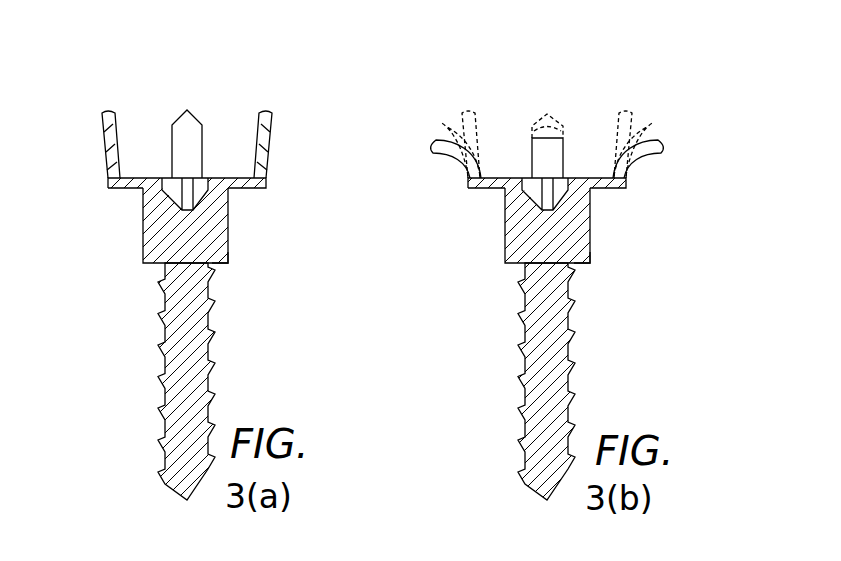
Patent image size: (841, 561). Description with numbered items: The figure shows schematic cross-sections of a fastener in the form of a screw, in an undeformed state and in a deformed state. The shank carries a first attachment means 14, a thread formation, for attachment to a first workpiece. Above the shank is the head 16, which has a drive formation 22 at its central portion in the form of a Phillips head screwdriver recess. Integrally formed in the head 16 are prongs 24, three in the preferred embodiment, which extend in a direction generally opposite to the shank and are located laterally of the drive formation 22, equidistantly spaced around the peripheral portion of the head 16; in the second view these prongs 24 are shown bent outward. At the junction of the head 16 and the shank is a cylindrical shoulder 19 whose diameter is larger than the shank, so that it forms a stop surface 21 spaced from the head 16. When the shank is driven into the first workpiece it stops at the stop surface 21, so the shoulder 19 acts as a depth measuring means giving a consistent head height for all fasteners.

In FIG. 3A, the first attachment means 14 is at (225, 365).
In FIG. 3B, the first attachment means 14 is at (510, 375).
In FIG. 3A, the head 16 is at (277, 181).
In FIG. 3B, the head 16 is at (459, 181).
In FIG. 3A, the cylindrical shoulder 19 is at (238, 237).
In FIG. 3B, the cylindrical shoulder 19 is at (495, 237).
In FIG. 3A, the stop surface 21 is at (233, 273).
In FIG. 3B, the stop surface 21 is at (593, 273).
In FIG. 3A, the drive formation 22 is at (171, 195).
In FIG. 3B, the drive formation 22 is at (560, 195).
In FIG. 3A, the prongs 24 is at (262, 105).
In FIG. 3B, the prongs 24 is at (644, 112).